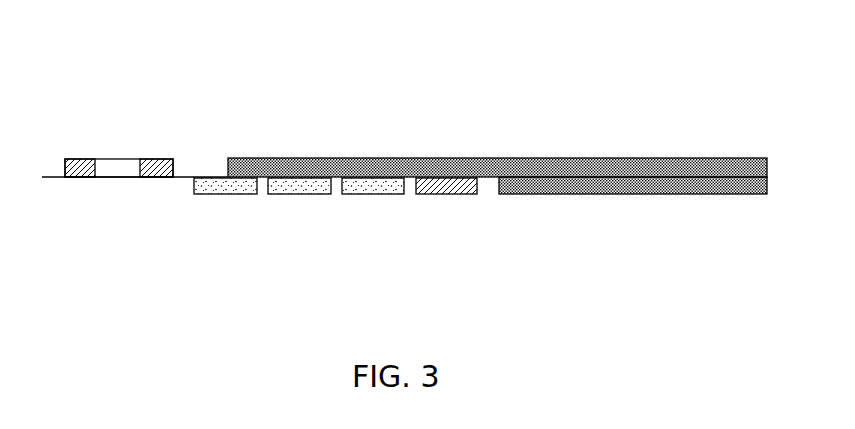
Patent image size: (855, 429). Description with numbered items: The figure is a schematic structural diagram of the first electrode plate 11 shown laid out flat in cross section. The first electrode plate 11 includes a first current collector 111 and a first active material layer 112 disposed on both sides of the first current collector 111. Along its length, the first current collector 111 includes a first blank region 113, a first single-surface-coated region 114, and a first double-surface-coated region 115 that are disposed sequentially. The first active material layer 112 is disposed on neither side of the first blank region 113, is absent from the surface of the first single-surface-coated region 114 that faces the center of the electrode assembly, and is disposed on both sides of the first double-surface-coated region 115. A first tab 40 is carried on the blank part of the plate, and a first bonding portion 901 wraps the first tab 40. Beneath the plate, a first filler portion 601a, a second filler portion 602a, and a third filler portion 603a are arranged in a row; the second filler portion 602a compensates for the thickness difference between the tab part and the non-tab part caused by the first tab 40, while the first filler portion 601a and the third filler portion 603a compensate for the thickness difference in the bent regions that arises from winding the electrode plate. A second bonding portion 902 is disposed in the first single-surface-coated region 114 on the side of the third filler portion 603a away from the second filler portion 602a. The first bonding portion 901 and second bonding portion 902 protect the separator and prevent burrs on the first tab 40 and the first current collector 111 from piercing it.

The first electrode plate 11 is at (392, 158).
The first tab 40 is at (123, 168).
The first bonding portion 901 is at (83, 167).
The second bonding portion 902 is at (443, 188).
The first current collector 111 is at (520, 165).
The first active material layer 112 is at (600, 163).
The first blank region 113 is at (123, 194).
The first single-surface-coated region 114 is at (502, 230).
The first double-surface-coated region 115 is at (686, 146).
The first filler portion 601a is at (227, 190).
The second filler portion 602a is at (302, 192).
The third filler portion 603a is at (373, 190).